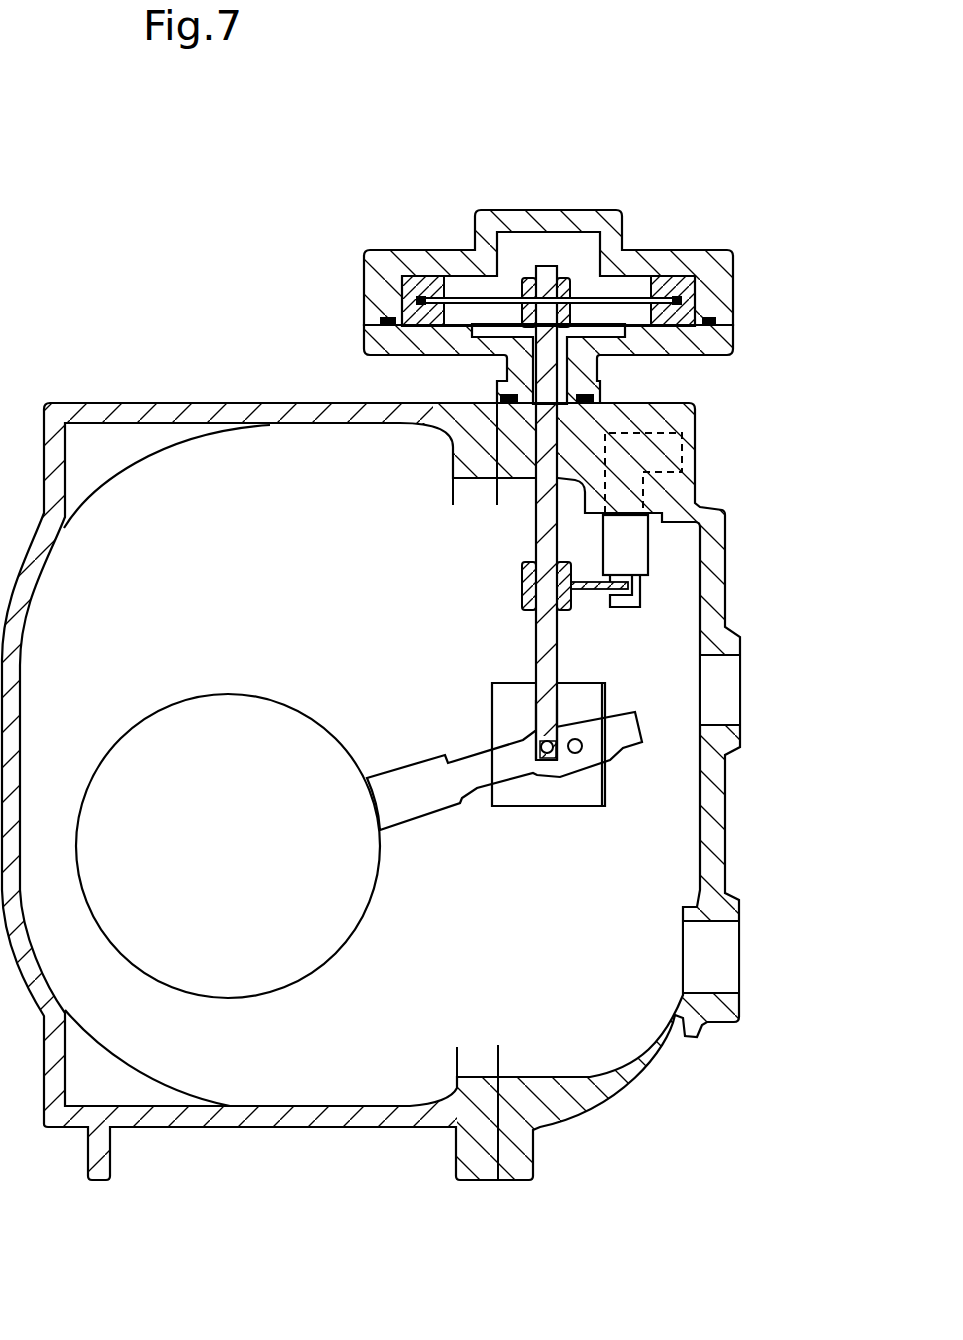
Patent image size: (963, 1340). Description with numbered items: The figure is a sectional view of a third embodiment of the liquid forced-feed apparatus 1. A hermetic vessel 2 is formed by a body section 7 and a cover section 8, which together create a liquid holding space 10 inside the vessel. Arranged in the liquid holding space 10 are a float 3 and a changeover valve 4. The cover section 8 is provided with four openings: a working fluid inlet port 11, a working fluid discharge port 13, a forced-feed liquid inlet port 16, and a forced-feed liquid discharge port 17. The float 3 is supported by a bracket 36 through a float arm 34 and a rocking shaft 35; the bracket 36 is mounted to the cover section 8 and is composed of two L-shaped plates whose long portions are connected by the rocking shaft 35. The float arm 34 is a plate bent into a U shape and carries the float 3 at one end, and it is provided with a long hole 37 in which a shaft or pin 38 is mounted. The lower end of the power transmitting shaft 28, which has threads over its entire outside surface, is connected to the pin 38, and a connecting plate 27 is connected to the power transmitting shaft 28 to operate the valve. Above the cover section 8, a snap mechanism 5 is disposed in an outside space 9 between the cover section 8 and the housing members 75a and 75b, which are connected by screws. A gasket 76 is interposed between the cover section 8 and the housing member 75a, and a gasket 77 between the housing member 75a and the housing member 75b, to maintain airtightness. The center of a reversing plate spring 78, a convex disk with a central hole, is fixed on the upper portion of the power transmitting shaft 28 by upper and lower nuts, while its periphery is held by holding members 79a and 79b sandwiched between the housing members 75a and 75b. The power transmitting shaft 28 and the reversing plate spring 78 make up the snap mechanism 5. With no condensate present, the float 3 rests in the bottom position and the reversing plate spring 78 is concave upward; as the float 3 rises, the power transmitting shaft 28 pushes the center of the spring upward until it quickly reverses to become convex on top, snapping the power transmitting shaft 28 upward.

The liquid forced-feed apparatus 1 is at (198, 337).
The hermetic vessel 2 is at (277, 337).
The float 3 is at (128, 735).
The changeover valve 4 is at (668, 542).
The snap mechanism 5 is at (570, 263).
The body section 7 is at (126, 403).
The cover section 8 is at (687, 415).
The outside space 9 is at (540, 240).
The liquid holding space 10 is at (190, 545).
The working fluid inlet port 11 is at (683, 448).
The working fluid discharge port 13 is at (643, 473).
The forced-feed liquid inlet port 16 is at (732, 691).
The forced-feed liquid discharge port 17 is at (730, 958).
The connecting plate 27 is at (640, 590).
The power transmitting shaft 28 is at (550, 670).
The float arm 34 is at (420, 805).
The rocking shaft 35 is at (575, 755).
The bracket 36 is at (595, 792).
The long hole 37 is at (552, 764).
The shaft (pin) 38 is at (545, 754).
The housing member 75a is at (720, 282).
The housing member 75b is at (722, 347).
The gasket 76 is at (497, 393).
The gasket 77 is at (695, 318).
The reversing plate spring 78 is at (462, 298).
The holding member 79a is at (412, 274).
The holding member 79b is at (385, 345).